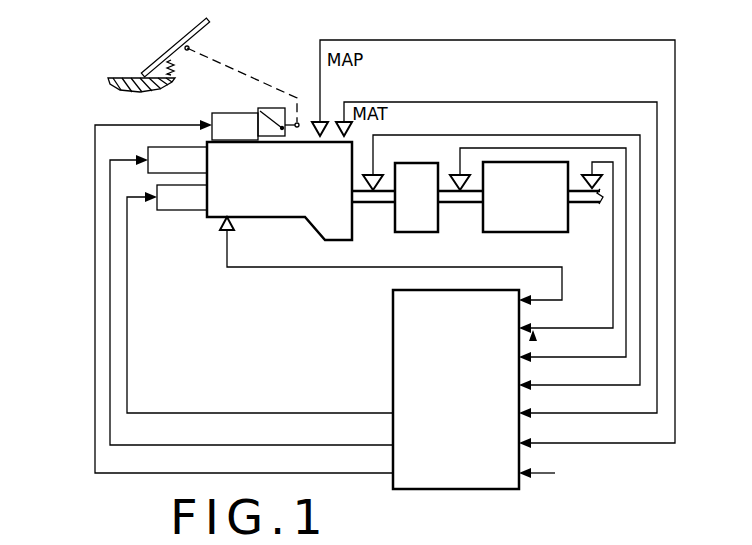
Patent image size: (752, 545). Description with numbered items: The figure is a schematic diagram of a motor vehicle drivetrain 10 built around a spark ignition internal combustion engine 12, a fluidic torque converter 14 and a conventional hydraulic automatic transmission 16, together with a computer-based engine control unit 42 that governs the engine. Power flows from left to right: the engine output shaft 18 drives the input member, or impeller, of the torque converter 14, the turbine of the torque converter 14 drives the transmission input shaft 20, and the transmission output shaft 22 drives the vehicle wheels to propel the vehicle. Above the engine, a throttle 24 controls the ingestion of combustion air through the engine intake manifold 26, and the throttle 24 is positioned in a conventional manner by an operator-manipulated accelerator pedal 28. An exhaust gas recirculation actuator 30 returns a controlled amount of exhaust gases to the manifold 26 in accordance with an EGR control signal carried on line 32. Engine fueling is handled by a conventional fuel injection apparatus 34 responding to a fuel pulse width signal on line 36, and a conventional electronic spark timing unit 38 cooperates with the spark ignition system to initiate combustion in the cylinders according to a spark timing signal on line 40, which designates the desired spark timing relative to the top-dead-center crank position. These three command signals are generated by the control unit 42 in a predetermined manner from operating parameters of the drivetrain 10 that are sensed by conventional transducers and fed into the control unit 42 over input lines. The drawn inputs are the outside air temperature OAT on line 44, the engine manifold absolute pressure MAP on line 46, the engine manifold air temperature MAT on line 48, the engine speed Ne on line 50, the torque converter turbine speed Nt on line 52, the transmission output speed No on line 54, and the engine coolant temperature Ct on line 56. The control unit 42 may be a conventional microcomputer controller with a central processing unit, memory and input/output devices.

The motor vehicle drivetrain 10 is at (291, 46).
The spark ignition internal combustion engine 12 is at (253, 218).
The fluidic torque converter 14 is at (429, 228).
The hydraulic automatic transmission 16 is at (549, 228).
The engine output shaft 18 is at (374, 205).
The transmission input shaft 20 is at (458, 204).
The transmission output shaft 22 is at (581, 203).
The throttle 24 is at (267, 108).
The engine intake manifold 26 is at (200, 139).
The accelerator pedal 28 is at (175, 52).
The exhaust gas recirculation actuator 30 is at (227, 113).
The EGR control signal line 32 is at (95, 178).
The fuel injection apparatus 34 is at (150, 142).
The fuel pulse width signal line 36 is at (110, 243).
The electronic spark timing unit 38 is at (190, 212).
The spark timing signal line 40 is at (127, 382).
The computer-based engine control unit 42 is at (391, 379).
The outside air temperature input line 44 is at (557, 475).
The manifold absolute pressure input line 46 is at (426, 42).
The manifold air temperature input line 48 is at (509, 101).
The engine speed input line 50 is at (526, 133).
The turbine speed input line 52 is at (589, 147).
The transmission output speed input line 54 is at (615, 183).
The engine coolant temperature input line 56 is at (302, 270).